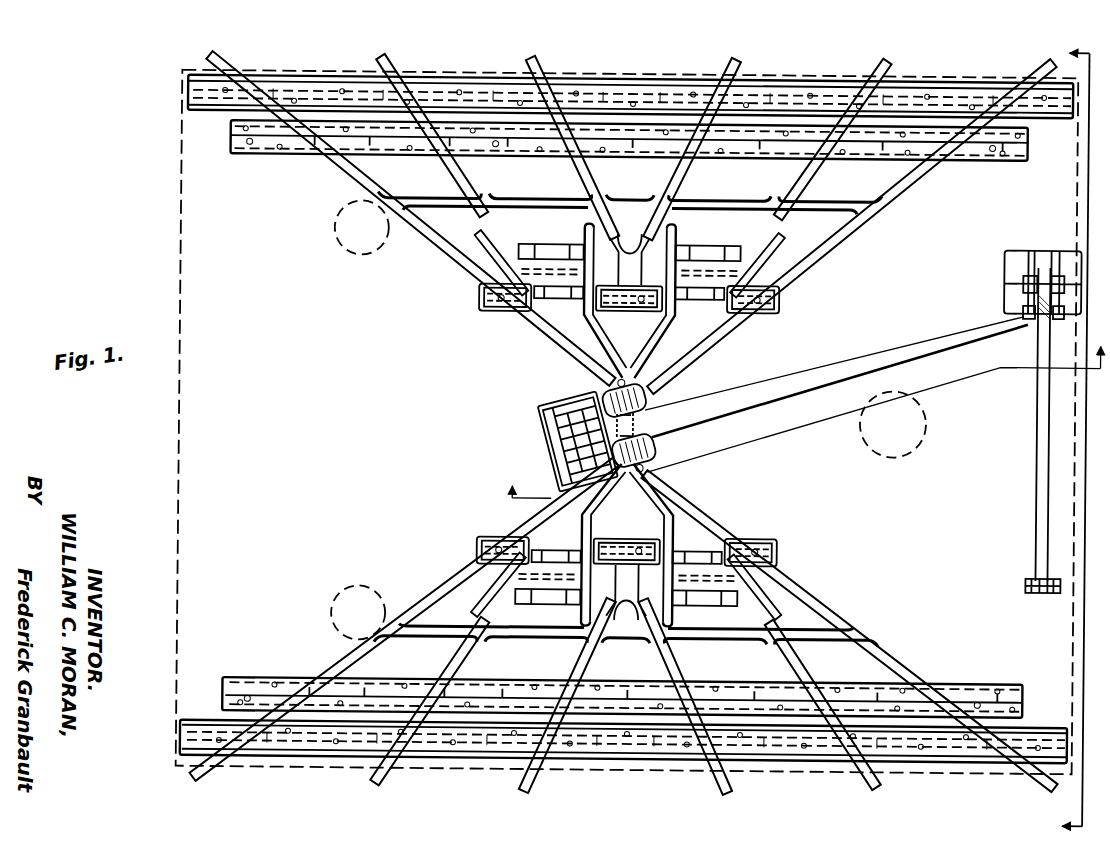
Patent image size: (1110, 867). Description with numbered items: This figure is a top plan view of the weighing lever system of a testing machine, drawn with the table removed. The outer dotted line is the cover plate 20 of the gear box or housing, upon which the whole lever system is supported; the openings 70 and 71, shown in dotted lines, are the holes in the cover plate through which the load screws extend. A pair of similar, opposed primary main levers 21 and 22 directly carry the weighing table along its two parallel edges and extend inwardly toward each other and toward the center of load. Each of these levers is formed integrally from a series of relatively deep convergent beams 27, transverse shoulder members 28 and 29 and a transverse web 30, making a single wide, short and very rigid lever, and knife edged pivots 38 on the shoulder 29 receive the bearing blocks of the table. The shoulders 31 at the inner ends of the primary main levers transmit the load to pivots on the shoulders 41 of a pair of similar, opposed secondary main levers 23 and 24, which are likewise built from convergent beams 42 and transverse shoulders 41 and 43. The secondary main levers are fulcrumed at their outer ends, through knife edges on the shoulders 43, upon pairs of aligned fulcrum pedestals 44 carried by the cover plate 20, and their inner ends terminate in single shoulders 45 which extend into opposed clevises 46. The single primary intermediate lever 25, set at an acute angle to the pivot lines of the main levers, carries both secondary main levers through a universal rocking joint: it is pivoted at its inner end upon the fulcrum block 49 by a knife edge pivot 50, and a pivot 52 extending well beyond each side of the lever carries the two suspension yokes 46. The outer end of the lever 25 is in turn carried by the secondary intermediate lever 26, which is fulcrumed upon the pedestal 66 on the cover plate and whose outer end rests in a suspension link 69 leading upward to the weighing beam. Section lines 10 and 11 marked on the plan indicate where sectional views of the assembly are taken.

The section line 10- 10 is at (1086, 438).
The section line 11- 11 is at (791, 424).
The cover plate 20 is at (427, 72).
The primary main lever 21 is at (630, 181).
The primary main lever 22 is at (626, 658).
The secondary main lever 23 is at (629, 301).
The secondary main lever 24 is at (627, 545).
The primary intermediate lever 25 is at (838, 371).
The secondary intermediate lever 26 is at (1037, 455).
The convergent beams 27 is at (206, 56).
The transverse shoulder member 28 is at (318, 77).
The transverse shoulder member 29 is at (279, 157).
The transverse web 30 is at (432, 204).
The shoulder 31 is at (480, 303).
The knife edged pivot 38 is at (247, 146).
The shoulder 41 is at (501, 312).
The convergent beams 42 is at (478, 232).
The transverse shoulder 43 is at (520, 264).
The fulcrum pedestal 44 is at (550, 243).
The shoulder 45 is at (608, 387).
The clevis 46 is at (646, 395).
The fulcrum block 49 is at (549, 452).
The knife edge pivot 50 is at (549, 402).
The pivot 52 is at (641, 381).
The pedestal 66 is at (1018, 250).
The suspension link 69 is at (1027, 580).
The opening 70 is at (926, 418).
The opening 71 is at (333, 228).